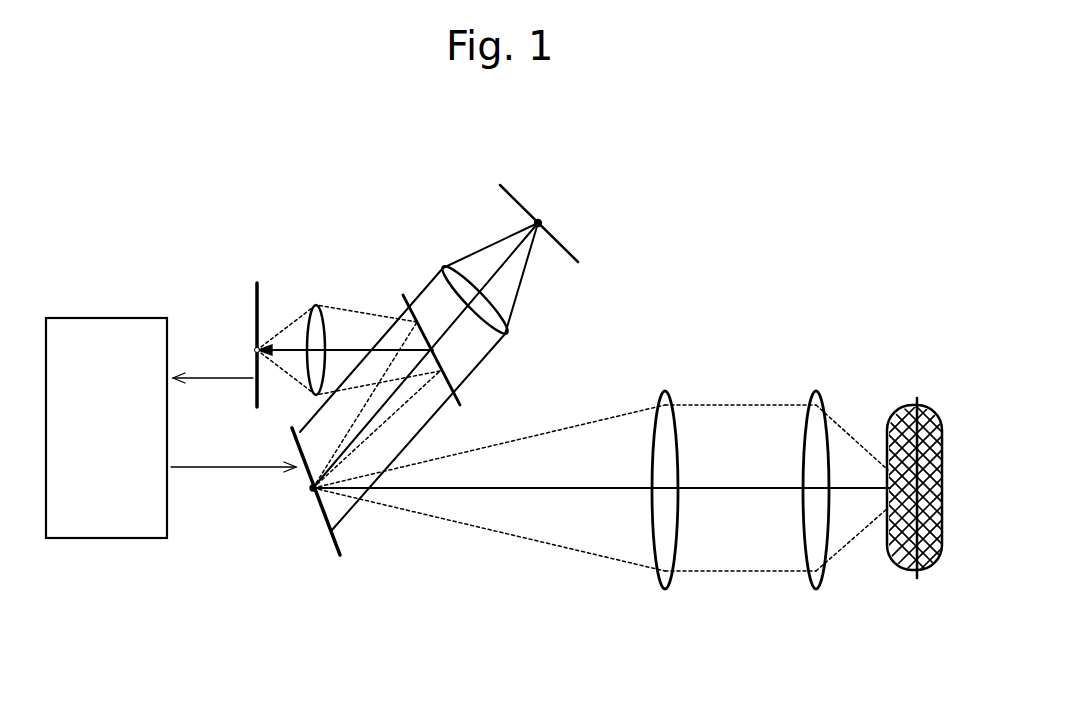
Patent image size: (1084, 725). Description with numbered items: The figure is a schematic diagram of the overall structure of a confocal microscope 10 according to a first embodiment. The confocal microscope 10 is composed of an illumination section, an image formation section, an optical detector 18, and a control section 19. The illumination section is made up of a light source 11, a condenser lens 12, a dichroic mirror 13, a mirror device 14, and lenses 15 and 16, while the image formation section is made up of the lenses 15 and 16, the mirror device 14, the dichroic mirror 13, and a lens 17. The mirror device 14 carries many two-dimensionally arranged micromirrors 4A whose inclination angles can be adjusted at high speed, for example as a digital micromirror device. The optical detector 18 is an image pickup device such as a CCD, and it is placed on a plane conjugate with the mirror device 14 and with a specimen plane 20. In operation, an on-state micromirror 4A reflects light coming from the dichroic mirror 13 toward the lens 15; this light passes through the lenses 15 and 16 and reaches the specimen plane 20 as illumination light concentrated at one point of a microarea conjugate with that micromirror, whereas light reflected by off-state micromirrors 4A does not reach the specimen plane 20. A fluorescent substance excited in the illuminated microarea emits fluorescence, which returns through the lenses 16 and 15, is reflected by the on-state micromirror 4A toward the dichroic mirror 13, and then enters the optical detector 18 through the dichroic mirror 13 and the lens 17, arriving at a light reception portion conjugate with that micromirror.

The confocal microscope 10 is at (177, 166).
The light source 11 is at (549, 222).
The condenser lens 12 is at (512, 330).
The dichroic mirror 13 is at (461, 397).
The mirror device 14 is at (300, 517).
The micromirror 4A is at (340, 536).
The lens 15 is at (665, 594).
The lens 16 is at (816, 594).
The lens 17 is at (316, 301).
The optical detector 18 is at (256, 280).
The control section 19 is at (105, 318).
The specimen plane 20 is at (908, 593).